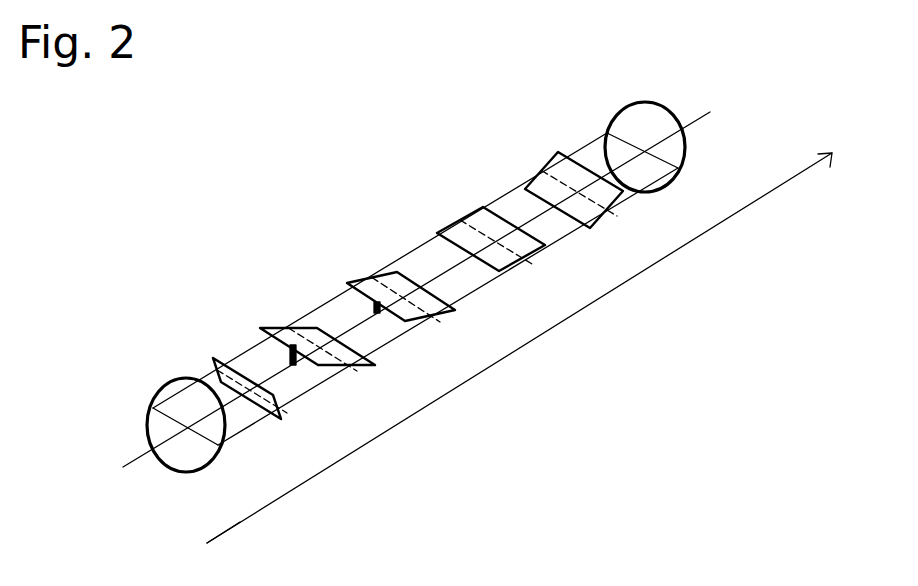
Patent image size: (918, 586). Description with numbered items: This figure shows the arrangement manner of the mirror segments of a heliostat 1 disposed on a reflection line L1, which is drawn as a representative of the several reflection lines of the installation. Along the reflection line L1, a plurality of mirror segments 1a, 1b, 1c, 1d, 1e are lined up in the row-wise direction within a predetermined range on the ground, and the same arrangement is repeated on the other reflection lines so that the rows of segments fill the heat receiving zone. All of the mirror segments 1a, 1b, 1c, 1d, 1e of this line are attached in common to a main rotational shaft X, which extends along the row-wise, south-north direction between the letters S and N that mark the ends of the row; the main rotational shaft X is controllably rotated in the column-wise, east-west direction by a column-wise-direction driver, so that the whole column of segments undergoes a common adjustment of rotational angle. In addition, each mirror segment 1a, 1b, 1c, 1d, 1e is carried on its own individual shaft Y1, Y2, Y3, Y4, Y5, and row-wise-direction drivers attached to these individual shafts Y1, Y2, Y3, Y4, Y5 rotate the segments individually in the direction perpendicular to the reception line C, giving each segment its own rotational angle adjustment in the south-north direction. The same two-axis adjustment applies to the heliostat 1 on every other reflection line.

The heliostat 1 is at (290, 542).
The mirror segment 1a is at (274, 420).
The mirror segment 1b is at (330, 372).
The mirror segment 1c is at (413, 318).
The mirror segment 1d is at (505, 267).
The mirror segment 1e is at (590, 222).
The individual shaft Y1 is at (213, 356).
The individual shaft Y2 is at (288, 327).
The individual shaft Y3 is at (374, 277).
The individual shaft Y4 is at (462, 220).
The individual shaft Y5 is at (540, 172).
The reflection line L1 is at (375, 309).
The main rotational shaft X is at (160, 432).
The reception line C is at (672, 139).
The propagation direction arrow end N is at (544, 335).
The propagation direction arrow start S is at (204, 547).